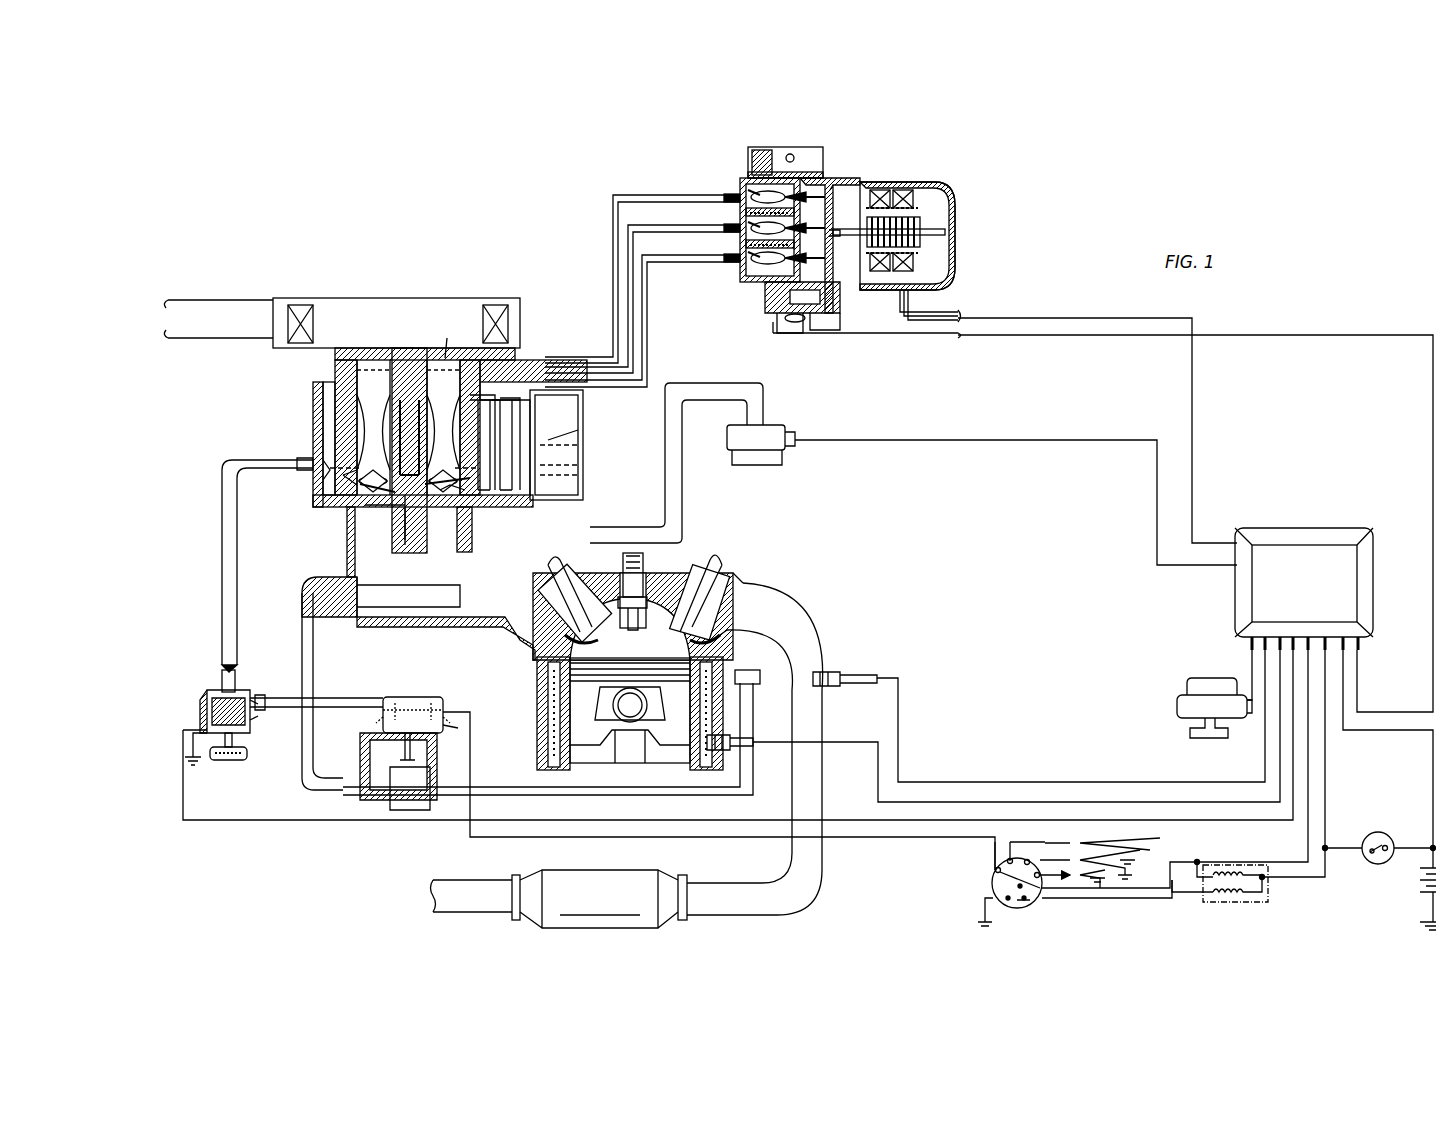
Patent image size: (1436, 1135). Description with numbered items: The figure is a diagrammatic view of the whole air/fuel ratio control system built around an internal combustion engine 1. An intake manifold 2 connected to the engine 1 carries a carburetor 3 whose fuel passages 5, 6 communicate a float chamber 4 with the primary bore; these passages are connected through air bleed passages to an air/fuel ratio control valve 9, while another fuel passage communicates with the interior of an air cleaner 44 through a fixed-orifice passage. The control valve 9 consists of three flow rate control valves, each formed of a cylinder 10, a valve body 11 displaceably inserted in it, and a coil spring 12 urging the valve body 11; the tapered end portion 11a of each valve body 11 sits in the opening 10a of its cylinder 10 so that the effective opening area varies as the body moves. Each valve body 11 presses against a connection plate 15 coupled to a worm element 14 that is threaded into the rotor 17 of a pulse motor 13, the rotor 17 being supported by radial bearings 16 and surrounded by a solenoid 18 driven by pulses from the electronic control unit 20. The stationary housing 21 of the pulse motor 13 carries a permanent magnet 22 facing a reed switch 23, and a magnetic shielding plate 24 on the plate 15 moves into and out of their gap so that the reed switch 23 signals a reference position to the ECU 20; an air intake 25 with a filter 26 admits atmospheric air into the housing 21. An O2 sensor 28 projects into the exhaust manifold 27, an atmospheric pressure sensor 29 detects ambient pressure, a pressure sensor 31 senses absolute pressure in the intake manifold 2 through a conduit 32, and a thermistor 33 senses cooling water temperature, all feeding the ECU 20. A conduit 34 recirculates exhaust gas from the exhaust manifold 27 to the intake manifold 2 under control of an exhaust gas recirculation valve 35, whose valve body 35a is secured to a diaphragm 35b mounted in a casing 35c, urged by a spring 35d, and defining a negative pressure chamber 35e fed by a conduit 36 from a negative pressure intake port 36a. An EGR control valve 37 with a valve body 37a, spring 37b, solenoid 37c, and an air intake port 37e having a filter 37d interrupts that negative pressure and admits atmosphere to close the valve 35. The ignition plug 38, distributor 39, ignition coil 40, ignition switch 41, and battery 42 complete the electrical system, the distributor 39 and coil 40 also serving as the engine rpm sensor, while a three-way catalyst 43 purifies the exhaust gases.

The internal combustion engine 1 is at (535, 742).
The intake manifold 2 is at (450, 625).
The carburetor 3 is at (535, 343).
The float chamber 4 is at (585, 483).
The fuel passage 5 is at (506, 492).
The fuel passage 6 is at (484, 492).
The air/fuel ratio control valve 9 is at (797, 238).
The cylinder 10 is at (770, 192).
The opening 10a is at (812, 185).
The valve body 11 is at (746, 190).
The tapered end portion 11a is at (810, 200).
The coil spring 12 is at (748, 192).
The pulse motor 13 is at (886, 226).
The worm element 14 is at (948, 233).
The connection plate 15 is at (833, 195).
The radial bearings 16 is at (950, 195).
The rotor 17 is at (930, 222).
The solenoid 18 is at (915, 192).
The electronic control unit 20 is at (1288, 528).
The stationary housing 21 is at (775, 300).
The permanent magnet 22 is at (790, 318).
The reed switch 23 is at (800, 333).
The magnetic shielding plate 24 is at (835, 332).
The air intake 25 is at (790, 150).
The filter 26 is at (758, 148).
The exhaust manifold 27 is at (798, 610).
The O2 sensor 28 is at (862, 672).
The atmospheric pressure sensor 29 is at (1240, 728).
The pressure sensor 31 is at (778, 428).
The conduit 32 is at (683, 480).
The thermistor 33 is at (753, 740).
The conduit 34 is at (314, 650).
The exhaust gas recirculation valve 35 is at (677, 752).
The valve body 35a is at (420, 765).
The diaphragm 35b is at (450, 715).
The casing 35c is at (450, 722).
The spring 35d is at (432, 697).
The negative pressure chamber 35e is at (400, 697).
The conduit 36 is at (222, 538).
The negative pressure intake port 36a is at (452, 495).
The EGR control valve 37 is at (729, 730).
The valve body 37a is at (222, 685).
The spring 37b is at (250, 722).
The solenoid 37c is at (205, 705).
The filter 37d is at (235, 762).
The air intake port 37e is at (247, 755).
The ignition plug 38 is at (645, 585).
The distributor 39 is at (1028, 905).
The ignition coil 40 is at (1255, 866).
The ignition switch 41 is at (1378, 832).
The battery 42 is at (1418, 884).
The three-way catalyst 43 is at (665, 928).
The air cleaner 44 is at (344, 298).